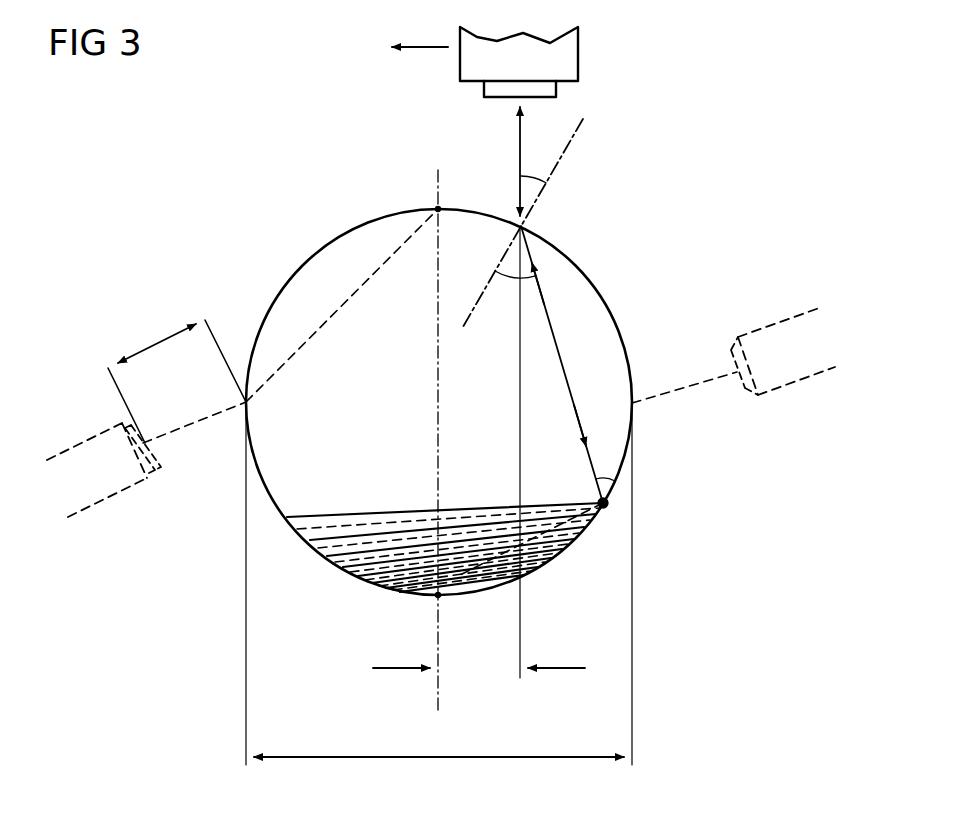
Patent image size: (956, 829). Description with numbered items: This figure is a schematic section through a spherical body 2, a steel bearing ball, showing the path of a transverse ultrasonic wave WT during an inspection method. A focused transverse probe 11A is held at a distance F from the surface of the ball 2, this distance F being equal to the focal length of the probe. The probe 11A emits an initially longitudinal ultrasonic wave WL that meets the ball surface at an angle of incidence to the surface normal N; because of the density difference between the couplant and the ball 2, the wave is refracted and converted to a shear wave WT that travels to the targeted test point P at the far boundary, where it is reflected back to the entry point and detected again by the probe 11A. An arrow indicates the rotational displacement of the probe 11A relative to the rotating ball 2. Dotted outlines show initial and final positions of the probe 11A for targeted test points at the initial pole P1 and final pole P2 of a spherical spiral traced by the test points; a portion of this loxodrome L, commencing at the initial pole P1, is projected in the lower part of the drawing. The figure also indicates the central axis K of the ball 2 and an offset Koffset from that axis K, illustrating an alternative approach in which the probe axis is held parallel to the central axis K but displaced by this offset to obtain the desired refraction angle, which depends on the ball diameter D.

The transverse probe 11A is at (567, 57).
The spherical body 2 is at (334, 251).
The distance F is at (152, 344).
The final pole P2 is at (436, 209).
The initial pole P1 is at (436, 598).
The targeted test point P is at (608, 508).
The normal N is at (572, 132).
The longitudinal ultrasonic wave WL is at (518, 144).
The transverse ultrasonic wave WT is at (614, 482).
The loxodrome L is at (324, 547).
The central axis K is at (437, 694).
The offset distance Koffset is at (479, 688).
The diameter D is at (560, 755).